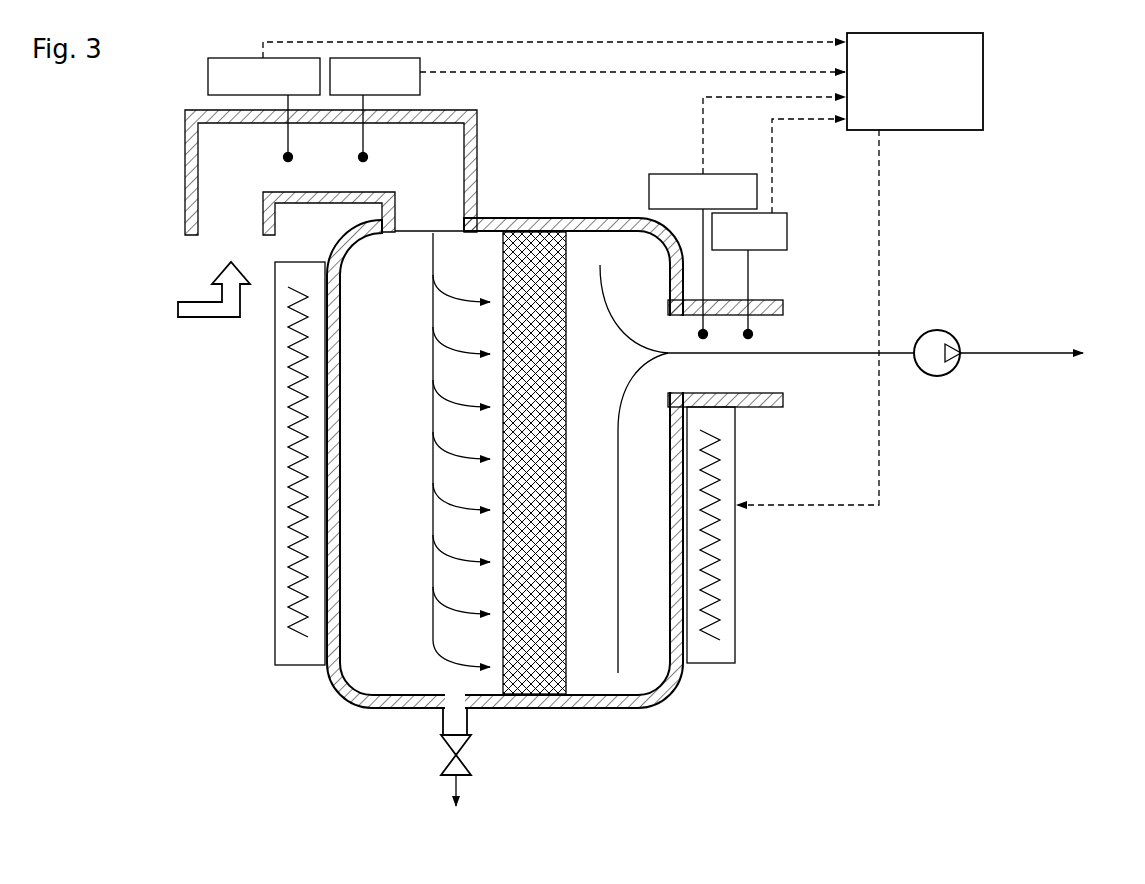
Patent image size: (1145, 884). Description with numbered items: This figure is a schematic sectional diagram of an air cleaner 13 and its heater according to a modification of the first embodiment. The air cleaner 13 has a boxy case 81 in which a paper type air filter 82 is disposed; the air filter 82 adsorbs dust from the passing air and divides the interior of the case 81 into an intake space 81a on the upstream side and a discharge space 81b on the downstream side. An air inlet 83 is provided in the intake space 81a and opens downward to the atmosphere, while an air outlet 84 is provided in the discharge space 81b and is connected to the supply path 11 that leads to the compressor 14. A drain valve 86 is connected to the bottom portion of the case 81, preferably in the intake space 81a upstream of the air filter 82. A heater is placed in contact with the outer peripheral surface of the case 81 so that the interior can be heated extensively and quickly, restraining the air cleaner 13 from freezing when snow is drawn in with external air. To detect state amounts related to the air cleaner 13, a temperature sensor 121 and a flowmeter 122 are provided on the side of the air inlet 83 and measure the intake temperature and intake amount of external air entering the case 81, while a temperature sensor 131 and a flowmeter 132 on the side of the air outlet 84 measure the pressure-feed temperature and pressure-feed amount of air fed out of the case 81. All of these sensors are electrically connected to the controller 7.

The controller 7 is at (983, 85).
The supply path 11 is at (1033, 356).
The air cleaner 13 is at (519, 429).
The compressor 14 is at (937, 330).
The case 81 is at (518, 226).
The intake space 81a is at (372, 670).
The discharge space 81b is at (643, 667).
The air filter 82 is at (566, 240).
The air inlet 83 is at (210, 237).
The air outlet 84 is at (775, 375).
The drain valve 86 is at (466, 765).
The temperature sensor 121 is at (208, 78).
The flowmeter 122 is at (420, 82).
The temperature sensor 131 is at (665, 174).
The flowmeter 132 is at (787, 230).